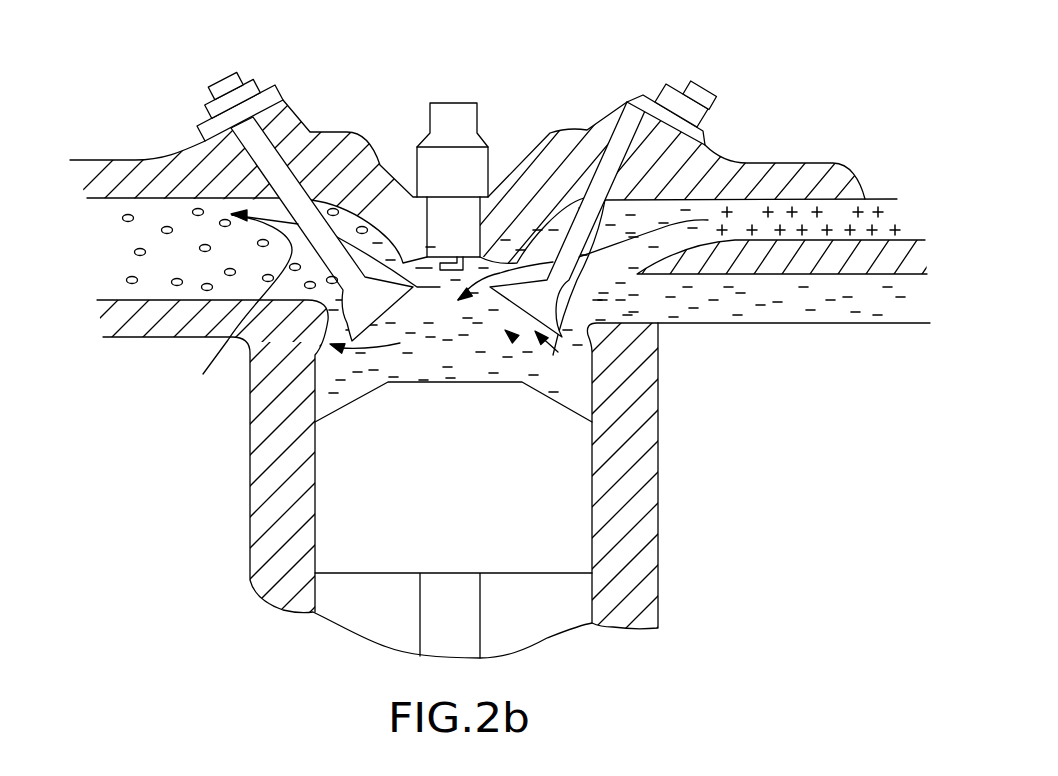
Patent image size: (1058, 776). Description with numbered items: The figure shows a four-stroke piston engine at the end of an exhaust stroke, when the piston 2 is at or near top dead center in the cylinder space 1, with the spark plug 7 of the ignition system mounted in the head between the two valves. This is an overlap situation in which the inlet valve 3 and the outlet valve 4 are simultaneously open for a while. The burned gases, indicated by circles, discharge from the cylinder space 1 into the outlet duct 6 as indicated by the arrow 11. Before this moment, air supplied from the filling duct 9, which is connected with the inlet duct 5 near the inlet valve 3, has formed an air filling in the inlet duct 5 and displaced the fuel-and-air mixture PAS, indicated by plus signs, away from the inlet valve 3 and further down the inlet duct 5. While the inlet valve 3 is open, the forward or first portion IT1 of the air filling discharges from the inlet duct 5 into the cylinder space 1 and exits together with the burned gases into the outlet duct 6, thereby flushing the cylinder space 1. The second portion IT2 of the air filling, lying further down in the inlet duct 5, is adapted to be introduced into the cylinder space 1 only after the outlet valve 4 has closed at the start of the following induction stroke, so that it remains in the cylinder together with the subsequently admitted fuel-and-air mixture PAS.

The cylinder space 1 is at (567, 391).
The piston 2 is at (516, 506).
The inlet valve 3 is at (645, 148).
The outlet valve 4 is at (276, 165).
The inlet duct 5 is at (840, 212).
The outlet duct 6 is at (150, 213).
The spark plug 7 is at (468, 112).
The filling duct 9 is at (847, 313).
The arrow 11 is at (241, 304).
The first portion of air filling IT1 is at (330, 346).
The second portion of air filling IT2 is at (507, 332).
The fuel-and-air mixture PAS is at (740, 222).